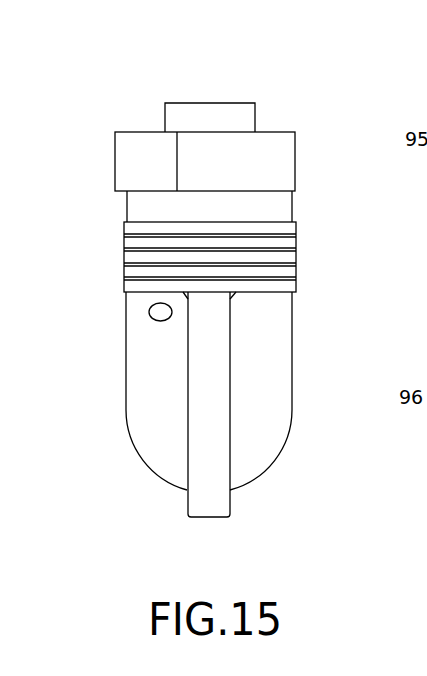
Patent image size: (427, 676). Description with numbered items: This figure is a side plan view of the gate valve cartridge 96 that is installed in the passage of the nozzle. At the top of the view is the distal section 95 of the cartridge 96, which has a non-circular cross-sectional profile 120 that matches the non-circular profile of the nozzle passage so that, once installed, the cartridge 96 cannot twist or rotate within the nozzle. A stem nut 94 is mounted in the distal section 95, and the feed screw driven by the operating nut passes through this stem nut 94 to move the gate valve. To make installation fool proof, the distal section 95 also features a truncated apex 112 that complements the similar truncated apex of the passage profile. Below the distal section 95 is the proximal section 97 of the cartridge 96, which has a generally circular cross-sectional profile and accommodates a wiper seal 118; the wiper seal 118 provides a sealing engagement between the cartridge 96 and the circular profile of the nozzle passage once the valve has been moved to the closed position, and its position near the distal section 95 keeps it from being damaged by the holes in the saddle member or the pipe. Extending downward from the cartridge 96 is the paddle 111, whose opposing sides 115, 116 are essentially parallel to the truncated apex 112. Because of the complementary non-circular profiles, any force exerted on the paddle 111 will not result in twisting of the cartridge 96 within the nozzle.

The stem nut 94 is at (255, 115).
The distal section 95 is at (115, 158).
The cartridge 96 is at (121, 368).
The proximal section 97 is at (243, 388).
The paddle 111 is at (206, 518).
The truncated apex 112 is at (296, 162).
The side of the paddle 115 is at (230, 505).
The opposing side of the paddle 116 is at (188, 503).
The wiper seal 118 is at (140, 267).
The non-circular cross-sectional profile 120 is at (227, 160).